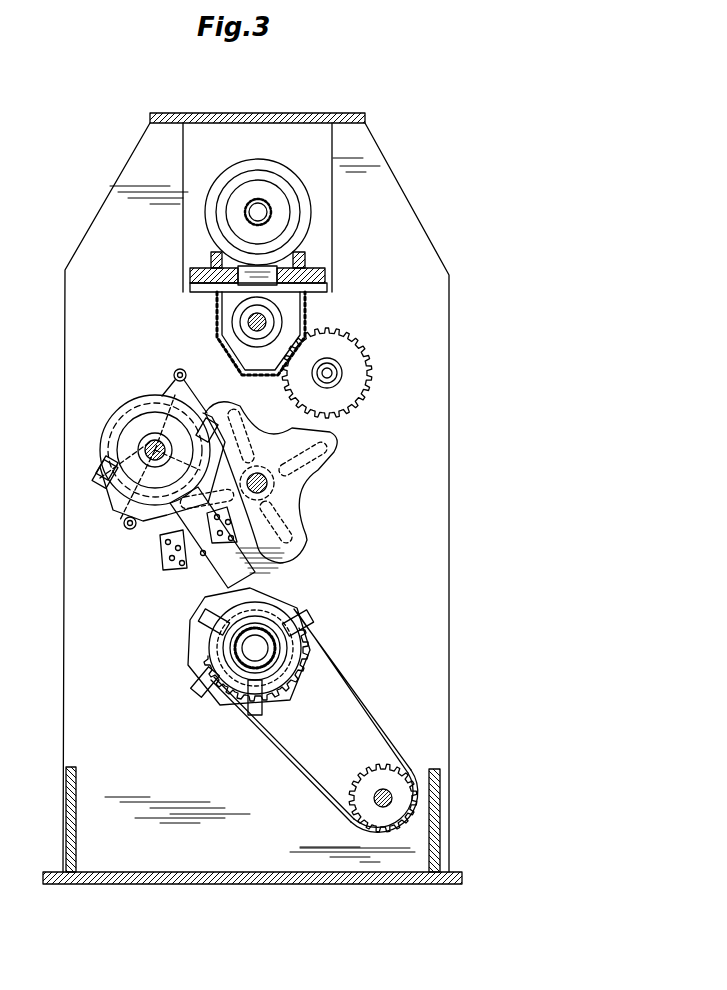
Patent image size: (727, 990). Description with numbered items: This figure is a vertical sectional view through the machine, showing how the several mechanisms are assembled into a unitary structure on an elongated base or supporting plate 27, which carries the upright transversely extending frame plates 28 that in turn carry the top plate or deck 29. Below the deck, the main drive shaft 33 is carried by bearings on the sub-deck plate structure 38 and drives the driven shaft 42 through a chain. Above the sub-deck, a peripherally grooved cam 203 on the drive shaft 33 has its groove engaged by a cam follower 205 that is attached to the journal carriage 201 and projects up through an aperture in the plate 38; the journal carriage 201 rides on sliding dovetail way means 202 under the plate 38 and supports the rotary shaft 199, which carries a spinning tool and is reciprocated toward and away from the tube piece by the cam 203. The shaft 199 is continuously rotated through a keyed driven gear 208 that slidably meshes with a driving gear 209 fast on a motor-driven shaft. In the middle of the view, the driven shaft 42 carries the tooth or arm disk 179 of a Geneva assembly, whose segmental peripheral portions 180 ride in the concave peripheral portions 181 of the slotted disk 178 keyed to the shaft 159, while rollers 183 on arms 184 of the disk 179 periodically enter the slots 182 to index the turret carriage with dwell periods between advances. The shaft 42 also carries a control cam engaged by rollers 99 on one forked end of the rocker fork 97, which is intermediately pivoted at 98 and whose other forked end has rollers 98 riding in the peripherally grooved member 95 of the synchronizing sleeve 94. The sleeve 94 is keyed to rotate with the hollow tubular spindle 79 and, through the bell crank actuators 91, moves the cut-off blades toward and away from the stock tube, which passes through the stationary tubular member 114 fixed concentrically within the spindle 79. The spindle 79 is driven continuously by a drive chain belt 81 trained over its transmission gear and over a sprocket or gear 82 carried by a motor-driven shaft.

The base or supporting plate 27 is at (382, 884).
The upright frame members or plates 28 is at (437, 458).
The top plate or deck 29 is at (353, 114).
The drive shaft 33 is at (266, 205).
The sub-deck plate structure 38 is at (320, 270).
The driven shaft 42 is at (148, 443).
The hollow tubular spindle 79 is at (263, 627).
The drive chain belt 81 is at (382, 723).
The sprocket or gear 82 is at (368, 772).
The bell crank actuators 91 is at (288, 623).
The synchronizing sleeve 94 is at (280, 670).
The peripherally grooved member 95 is at (298, 656).
The rocker fork 97 is at (207, 573).
The rollers 98 is at (163, 557).
The rollers 99 is at (208, 420).
The tubular member 114 is at (247, 652).
The shaft 159 is at (312, 470).
The slotted disk 178 is at (275, 485).
The tooth or arm disk 179 is at (145, 396).
The segmental peripheral portions 180 is at (140, 420).
The concave peripheral portions 181 is at (268, 402).
The slots 182 is at (320, 448).
The rollers 183 is at (200, 365).
The arms 184 is at (170, 362).
The rotary shaft 199 is at (262, 323).
The journal carriage 201 is at (222, 315).
The sliding dovetail way means 202 is at (305, 288).
The peripherally grooved cam 203 is at (306, 218).
The cam follower 205 is at (212, 265).
The keyed driven gear 208 is at (302, 330).
The driving gear 209 is at (360, 366).